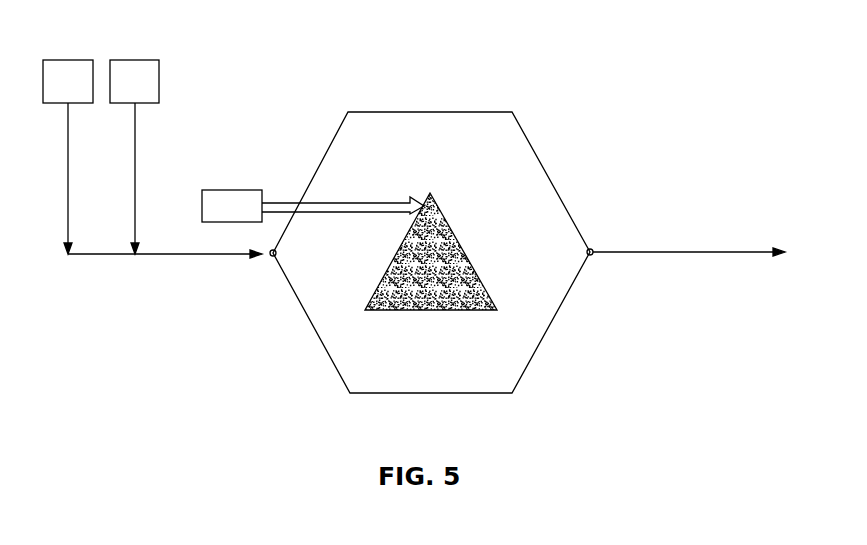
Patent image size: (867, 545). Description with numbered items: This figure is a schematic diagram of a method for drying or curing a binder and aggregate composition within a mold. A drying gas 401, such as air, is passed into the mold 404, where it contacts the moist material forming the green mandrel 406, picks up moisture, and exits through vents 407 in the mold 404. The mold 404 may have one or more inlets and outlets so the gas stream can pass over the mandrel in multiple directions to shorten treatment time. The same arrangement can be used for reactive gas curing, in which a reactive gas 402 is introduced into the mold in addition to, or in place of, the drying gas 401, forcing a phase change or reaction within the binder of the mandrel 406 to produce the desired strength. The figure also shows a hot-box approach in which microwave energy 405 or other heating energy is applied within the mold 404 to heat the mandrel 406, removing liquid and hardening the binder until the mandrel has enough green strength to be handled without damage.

The drying gas 401 is at (49, 92).
The reactive gas 402 is at (154, 92).
The mold 404 is at (518, 122).
The microwave energy 405 is at (243, 203).
The green mandrel 406 is at (483, 283).
The vents 407 is at (595, 248).